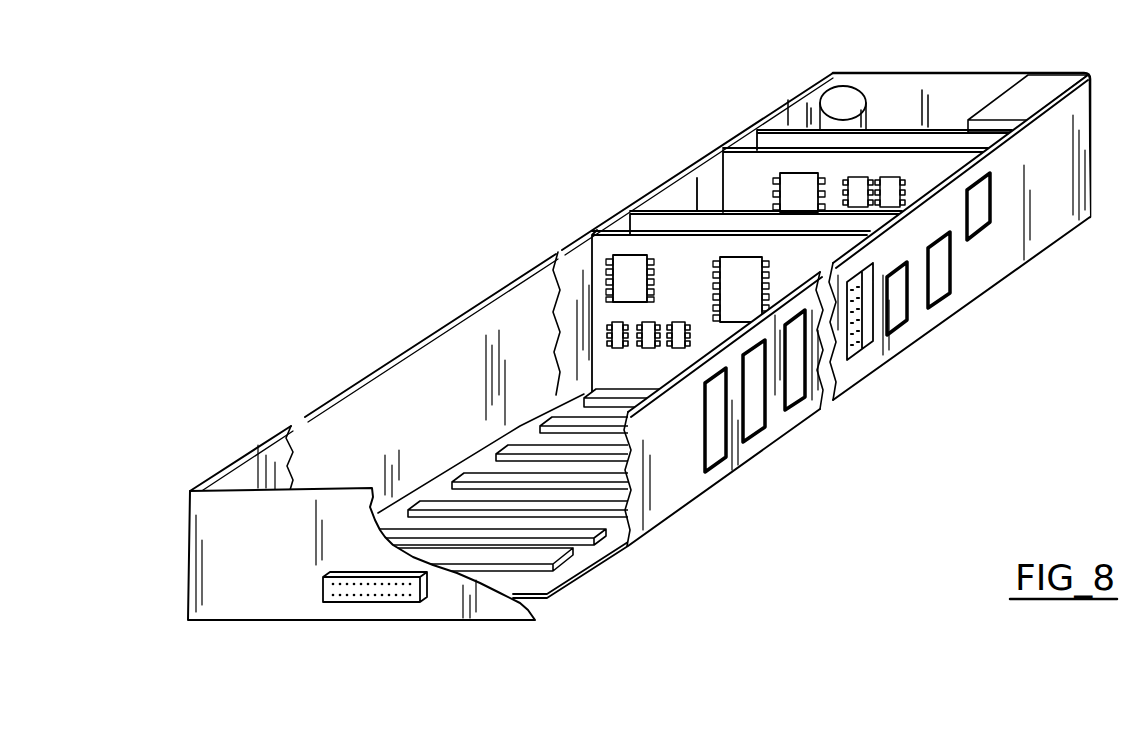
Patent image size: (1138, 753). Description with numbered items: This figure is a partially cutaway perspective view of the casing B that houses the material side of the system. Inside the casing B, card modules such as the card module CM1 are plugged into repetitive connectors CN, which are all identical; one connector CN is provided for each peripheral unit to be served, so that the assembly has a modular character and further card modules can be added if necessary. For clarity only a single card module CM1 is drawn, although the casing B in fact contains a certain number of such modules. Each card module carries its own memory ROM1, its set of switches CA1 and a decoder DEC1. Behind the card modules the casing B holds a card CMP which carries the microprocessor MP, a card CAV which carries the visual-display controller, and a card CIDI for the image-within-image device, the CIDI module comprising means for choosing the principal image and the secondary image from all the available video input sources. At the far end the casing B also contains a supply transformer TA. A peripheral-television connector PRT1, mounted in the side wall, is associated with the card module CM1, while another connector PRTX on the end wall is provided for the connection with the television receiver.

The casing B is at (639, 345).
The repetitive connector CN is at (541, 566).
The connector for the television receiver PRTX is at (397, 597).
The peripheral-television connector PRT1 is at (863, 350).
The memory ROM1 is at (626, 268).
The decoder DEC1 is at (742, 268).
The set of switches CA1 is at (647, 368).
The card module CM1 is at (667, 229).
The image-within-image device card CIDI is at (684, 207).
The microprocessor card CMP is at (719, 171).
The microprocessor MP is at (805, 182).
The visual-display controller card CAV is at (787, 126).
The supply transformer TA is at (1022, 97).